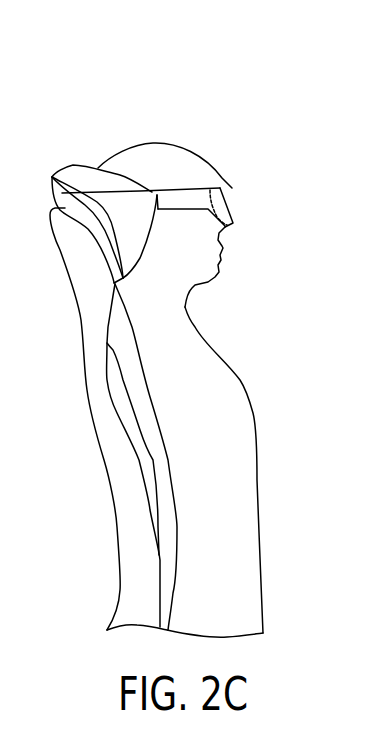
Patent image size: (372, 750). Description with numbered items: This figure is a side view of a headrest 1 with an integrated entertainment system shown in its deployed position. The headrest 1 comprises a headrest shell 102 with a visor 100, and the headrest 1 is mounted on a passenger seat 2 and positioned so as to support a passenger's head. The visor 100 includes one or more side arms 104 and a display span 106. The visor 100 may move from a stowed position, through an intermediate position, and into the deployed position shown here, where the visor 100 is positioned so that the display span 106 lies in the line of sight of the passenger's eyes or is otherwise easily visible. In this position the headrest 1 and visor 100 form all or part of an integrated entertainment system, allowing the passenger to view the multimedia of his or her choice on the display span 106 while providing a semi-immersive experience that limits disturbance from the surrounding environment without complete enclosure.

The headrest 1 is at (78, 113).
The passenger seat 2 is at (88, 504).
The visor 100 is at (230, 177).
The headrest shell 102 is at (55, 200).
The side arms 104 is at (200, 188).
The display span 106 is at (235, 208).